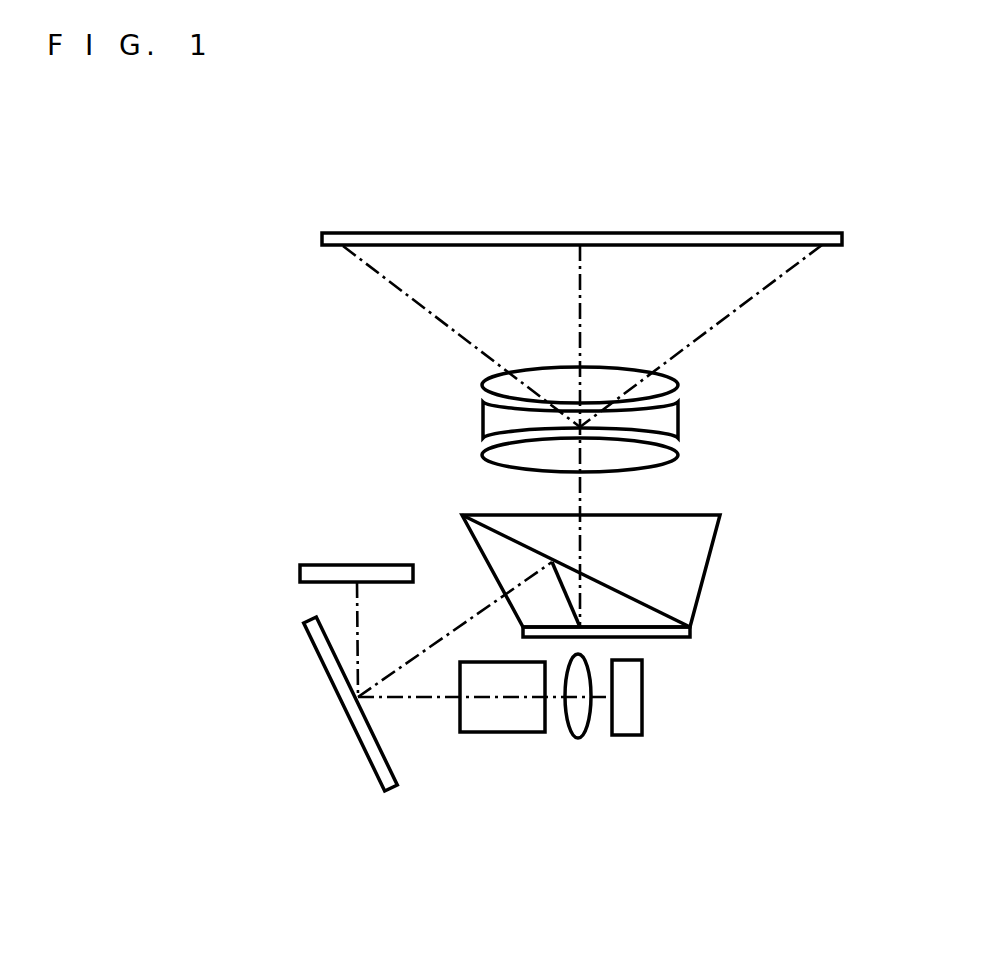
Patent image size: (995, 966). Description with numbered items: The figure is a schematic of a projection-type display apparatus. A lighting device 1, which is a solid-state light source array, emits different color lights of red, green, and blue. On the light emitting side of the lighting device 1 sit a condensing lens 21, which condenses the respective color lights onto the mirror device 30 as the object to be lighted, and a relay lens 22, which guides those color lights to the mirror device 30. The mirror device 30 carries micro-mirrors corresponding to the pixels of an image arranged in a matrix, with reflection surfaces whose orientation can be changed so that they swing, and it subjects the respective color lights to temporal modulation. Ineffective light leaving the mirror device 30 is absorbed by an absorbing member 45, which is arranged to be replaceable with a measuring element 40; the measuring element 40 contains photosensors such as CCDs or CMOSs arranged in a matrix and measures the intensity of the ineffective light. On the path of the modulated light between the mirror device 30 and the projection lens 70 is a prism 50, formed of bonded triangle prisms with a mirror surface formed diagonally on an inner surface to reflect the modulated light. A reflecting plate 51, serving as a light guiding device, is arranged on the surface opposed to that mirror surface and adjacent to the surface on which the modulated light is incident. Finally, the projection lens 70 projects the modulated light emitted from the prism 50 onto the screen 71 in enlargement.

The lighting device 1 is at (631, 755).
The condensing lens 21 is at (578, 738).
The relay lens 22 is at (502, 732).
The mirror device 30 is at (362, 730).
The measuring element 40 is at (283, 564).
The absorbing member 45 is at (300, 570).
The prism 50 is at (713, 548).
The reflecting plate 51 is at (678, 638).
The projection lens 70 is at (704, 367).
The screen 71 is at (822, 235).